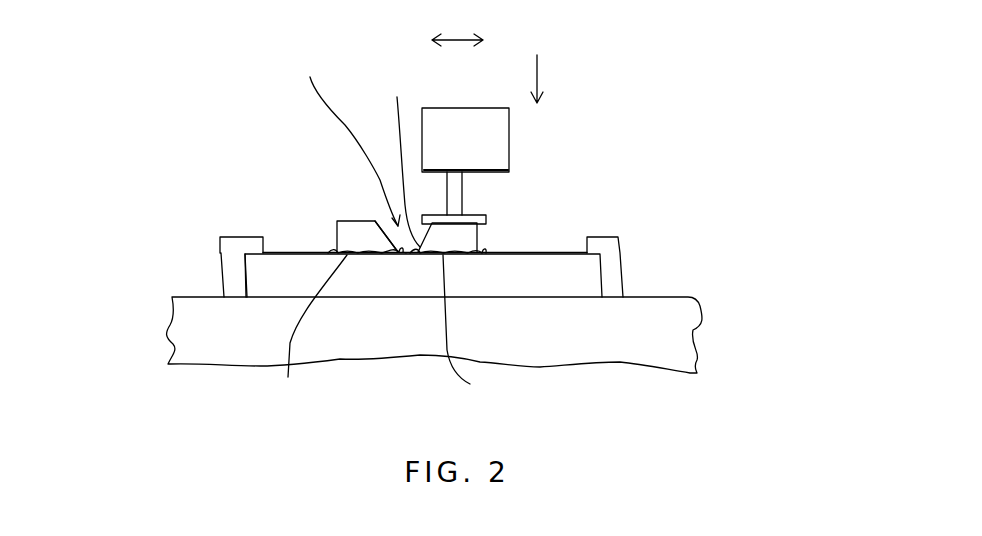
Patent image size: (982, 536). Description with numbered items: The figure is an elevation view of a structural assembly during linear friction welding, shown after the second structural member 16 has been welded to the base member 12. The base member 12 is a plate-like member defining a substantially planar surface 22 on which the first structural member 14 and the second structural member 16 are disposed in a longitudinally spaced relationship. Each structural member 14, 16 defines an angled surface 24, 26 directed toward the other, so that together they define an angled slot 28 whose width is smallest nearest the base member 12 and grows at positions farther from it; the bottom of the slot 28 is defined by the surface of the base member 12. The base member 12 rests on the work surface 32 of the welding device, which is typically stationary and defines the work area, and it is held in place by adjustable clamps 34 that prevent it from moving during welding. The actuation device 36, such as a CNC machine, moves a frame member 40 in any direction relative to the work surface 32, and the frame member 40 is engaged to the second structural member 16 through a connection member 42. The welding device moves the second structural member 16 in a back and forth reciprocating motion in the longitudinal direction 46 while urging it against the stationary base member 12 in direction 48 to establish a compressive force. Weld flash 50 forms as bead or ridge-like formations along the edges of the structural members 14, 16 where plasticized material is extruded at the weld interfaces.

The base member 12 is at (563, 262).
The first structural member 14 is at (337, 222).
The second structural member 16 is at (478, 237).
The planar surface 22 is at (550, 253).
The angled surface 24 is at (386, 221).
The angled surface 26 is at (399, 157).
The angled slot 28 is at (346, 135).
The work surface 32 is at (190, 295).
The adjustable clamps 34 is at (220, 252).
The actuation device 36 is at (479, 148).
The frame member 40 is at (458, 190).
The connection member 42 is at (485, 216).
The longitudinal direction 46 is at (455, 38).
The direction 48 is at (537, 76).
The weld flash 50 is at (388, 337).